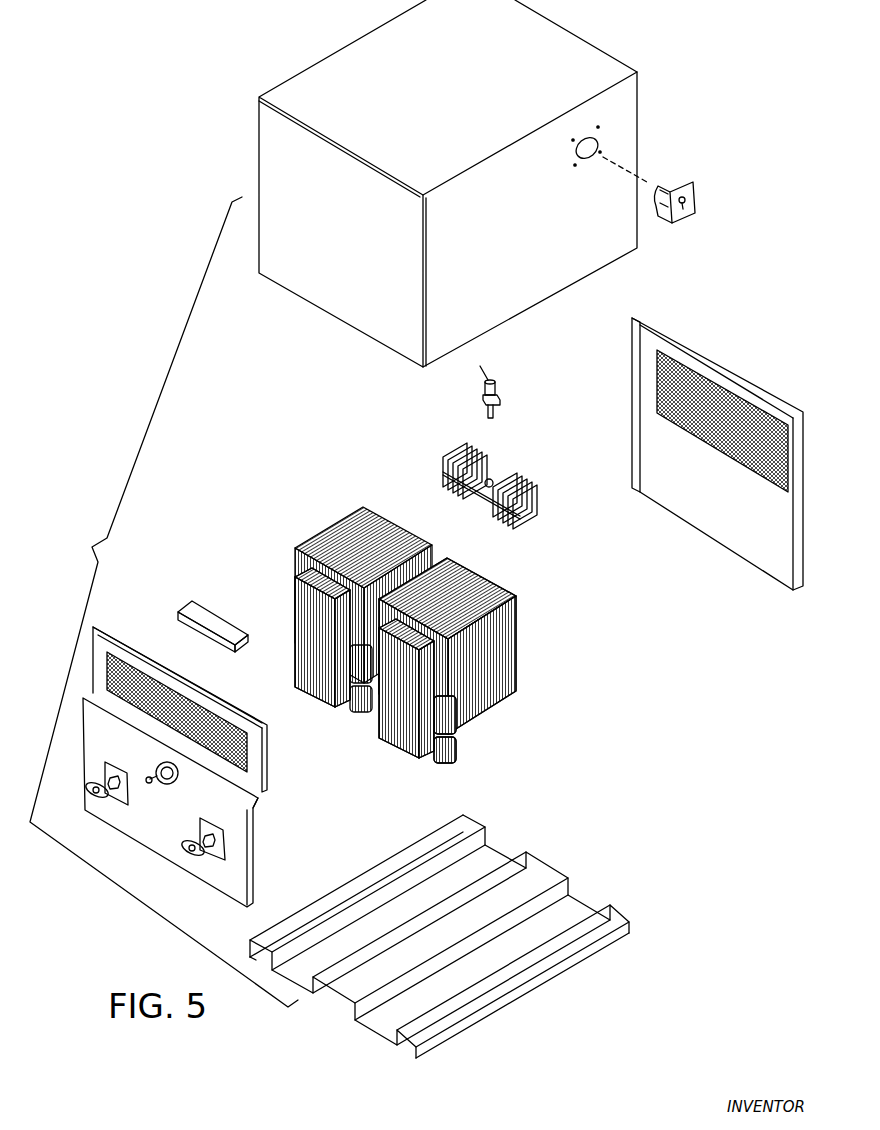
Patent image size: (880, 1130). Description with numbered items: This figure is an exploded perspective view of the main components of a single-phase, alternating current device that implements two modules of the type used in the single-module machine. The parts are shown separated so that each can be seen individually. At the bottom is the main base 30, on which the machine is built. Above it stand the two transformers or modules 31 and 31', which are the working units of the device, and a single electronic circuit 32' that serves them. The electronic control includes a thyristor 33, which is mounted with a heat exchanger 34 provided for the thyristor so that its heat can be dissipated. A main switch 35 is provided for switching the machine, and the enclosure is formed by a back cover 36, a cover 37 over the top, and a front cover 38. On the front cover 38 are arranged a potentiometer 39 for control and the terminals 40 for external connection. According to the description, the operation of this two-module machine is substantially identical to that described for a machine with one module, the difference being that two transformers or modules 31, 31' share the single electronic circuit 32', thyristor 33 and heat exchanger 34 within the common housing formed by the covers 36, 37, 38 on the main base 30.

The main base 30 is at (439, 936).
The transformer or module 31 is at (363, 609).
The transformer or module 31' is at (463, 660).
The single electronic circuit 32' is at (213, 624).
The thyristor 33 is at (506, 392).
The heat exchanger 34 is at (495, 486).
The main switch 35 is at (676, 190).
The back cover 36 is at (717, 454).
The cover 37 is at (453, 183).
The front cover 38 is at (175, 767).
The potentiometer 39 is at (179, 779).
The terminals 40 is at (154, 820).